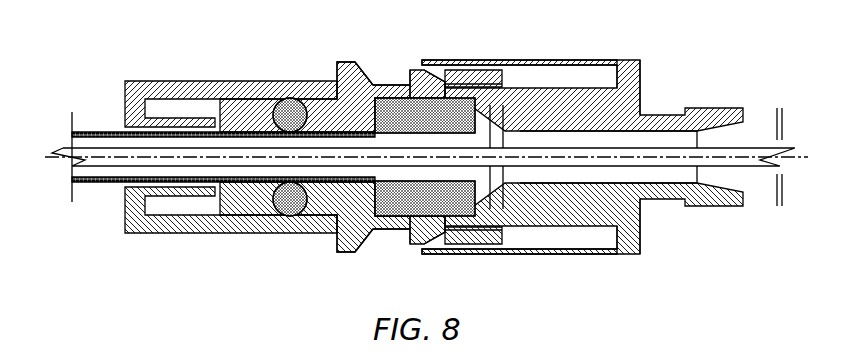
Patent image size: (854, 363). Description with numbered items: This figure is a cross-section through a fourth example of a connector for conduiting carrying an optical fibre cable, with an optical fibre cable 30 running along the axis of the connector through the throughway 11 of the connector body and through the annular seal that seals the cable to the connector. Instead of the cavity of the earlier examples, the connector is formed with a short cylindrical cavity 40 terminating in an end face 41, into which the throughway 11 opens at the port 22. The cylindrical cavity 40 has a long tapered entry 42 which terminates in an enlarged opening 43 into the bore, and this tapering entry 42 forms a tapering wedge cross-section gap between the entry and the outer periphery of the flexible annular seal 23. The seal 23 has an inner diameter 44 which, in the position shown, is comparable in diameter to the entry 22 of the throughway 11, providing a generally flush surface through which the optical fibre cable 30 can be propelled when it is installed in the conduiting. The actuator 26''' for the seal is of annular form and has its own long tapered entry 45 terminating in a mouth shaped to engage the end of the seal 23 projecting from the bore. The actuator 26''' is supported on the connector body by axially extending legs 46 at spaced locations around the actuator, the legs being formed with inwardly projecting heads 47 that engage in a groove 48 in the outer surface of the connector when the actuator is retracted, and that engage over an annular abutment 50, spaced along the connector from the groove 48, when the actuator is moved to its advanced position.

The optical fibre cable 30 is at (110, 148).
The throughway 11 is at (323, 222).
The port 22 is at (365, 207).
The end face 41 is at (356, 90).
The cylindrical cavity 40 is at (405, 84).
The axially extending legs 46 is at (585, 60).
The inwardly projecting heads 47 is at (445, 75).
The tapered entry 42 is at (477, 85).
The enlarged opening 43 is at (500, 63).
The actuator 26''' is at (655, 157).
The annular seal 23 is at (450, 203).
The inner diameter 44 is at (495, 180).
The tapered entry 45 is at (547, 177).
The groove 48 is at (440, 232).
The annular abutment 50 is at (413, 237).